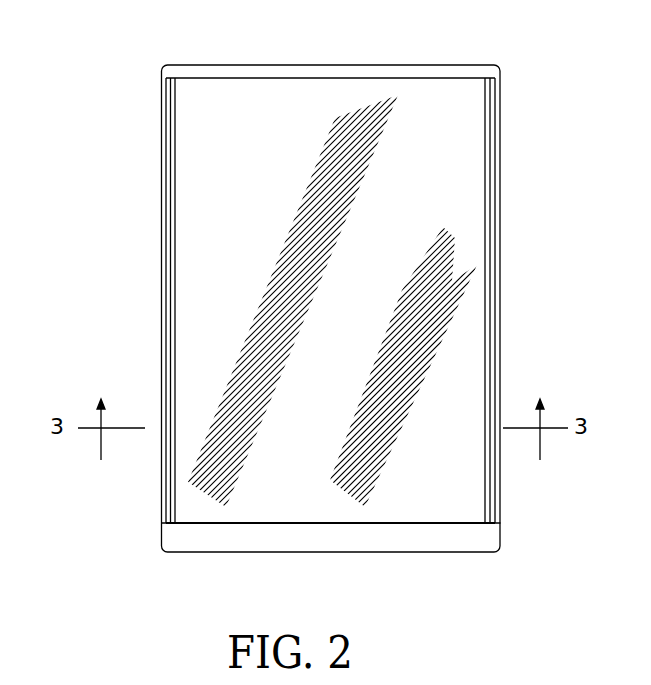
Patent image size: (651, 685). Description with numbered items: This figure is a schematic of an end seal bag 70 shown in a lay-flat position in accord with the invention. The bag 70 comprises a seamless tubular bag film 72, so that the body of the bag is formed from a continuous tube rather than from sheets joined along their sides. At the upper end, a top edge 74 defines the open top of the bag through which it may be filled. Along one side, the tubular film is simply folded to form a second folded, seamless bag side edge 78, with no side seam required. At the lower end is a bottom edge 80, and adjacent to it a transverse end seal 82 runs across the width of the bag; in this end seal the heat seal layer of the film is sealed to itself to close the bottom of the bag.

The end seal bag 70 is at (110, 190).
The seamless tubular bag film 72 is at (462, 220).
The top edge 74 is at (362, 74).
The second folded bag side edge 78 is at (480, 96).
The bottom edge 80 is at (212, 553).
The transverse end seal 82 is at (432, 523).